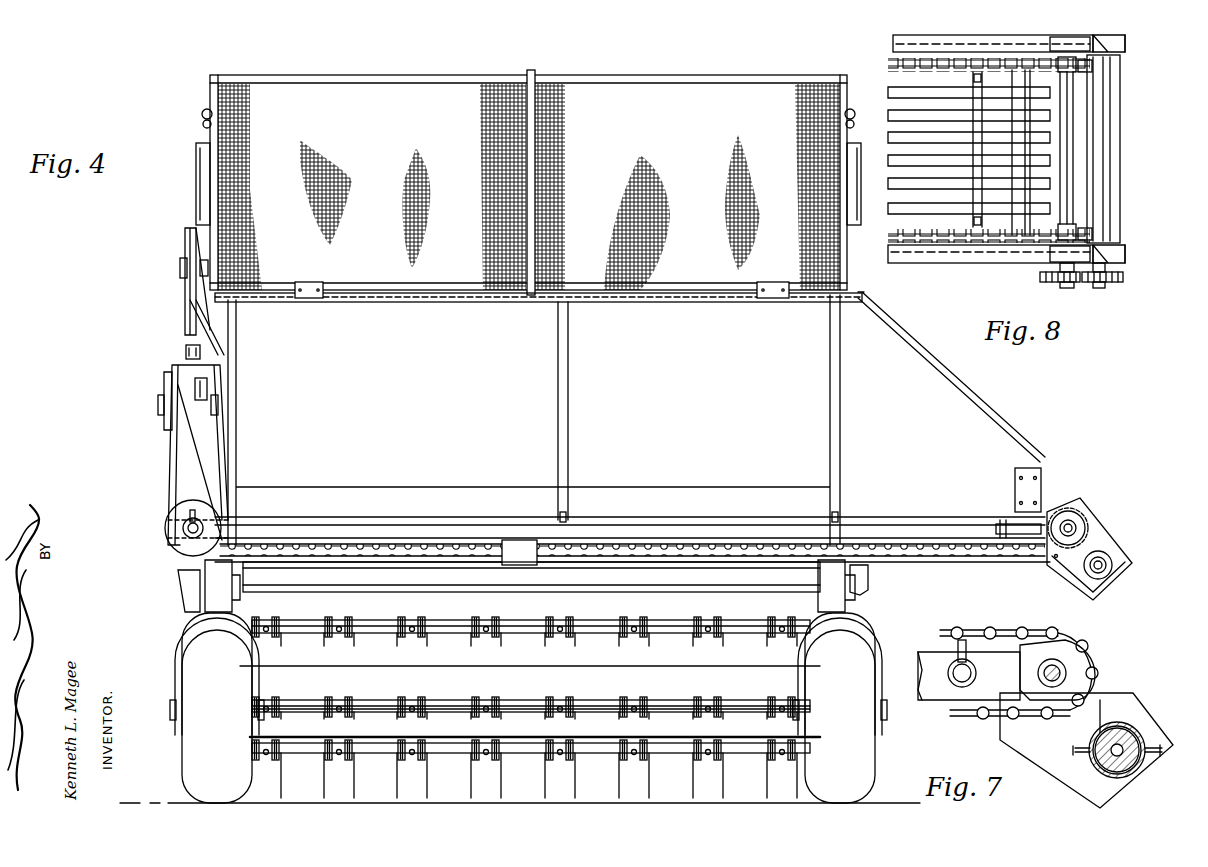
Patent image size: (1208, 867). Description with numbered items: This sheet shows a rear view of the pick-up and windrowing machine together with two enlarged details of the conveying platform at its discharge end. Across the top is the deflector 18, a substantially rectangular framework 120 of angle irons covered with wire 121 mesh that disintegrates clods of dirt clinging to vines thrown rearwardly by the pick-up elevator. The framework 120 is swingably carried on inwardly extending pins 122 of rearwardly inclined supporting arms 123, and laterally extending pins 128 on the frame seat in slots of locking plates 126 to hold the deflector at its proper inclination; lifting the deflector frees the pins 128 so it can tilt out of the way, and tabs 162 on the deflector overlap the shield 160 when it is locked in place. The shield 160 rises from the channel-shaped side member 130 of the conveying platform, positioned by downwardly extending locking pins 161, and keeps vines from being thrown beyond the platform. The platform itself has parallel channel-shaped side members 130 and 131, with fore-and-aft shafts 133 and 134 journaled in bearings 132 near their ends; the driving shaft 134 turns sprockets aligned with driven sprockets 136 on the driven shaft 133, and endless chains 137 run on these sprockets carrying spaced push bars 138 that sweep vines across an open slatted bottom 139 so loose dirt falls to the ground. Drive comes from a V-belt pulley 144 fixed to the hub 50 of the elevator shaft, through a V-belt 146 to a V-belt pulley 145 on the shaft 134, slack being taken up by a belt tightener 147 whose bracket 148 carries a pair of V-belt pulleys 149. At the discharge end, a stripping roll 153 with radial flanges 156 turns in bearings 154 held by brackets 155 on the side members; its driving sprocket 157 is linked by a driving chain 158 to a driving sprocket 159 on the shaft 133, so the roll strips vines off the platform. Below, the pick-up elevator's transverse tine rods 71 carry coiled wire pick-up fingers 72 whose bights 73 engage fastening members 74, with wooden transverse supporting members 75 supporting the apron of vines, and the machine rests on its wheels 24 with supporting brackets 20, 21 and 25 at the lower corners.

In FIG. 4, the deflector 18 is at (662, 64).
In FIG. 4, the bracket 20 is at (868, 582).
In FIG. 4, the bracket 21 is at (185, 584).
In FIG. 4, the wheel 24 is at (528, 708).
In FIG. 4, the wheel support 25 is at (529, 586).
In FIG. 4, the hub 50 is at (182, 267).
In FIG. 4, the tine rods 71 is at (531, 698).
In FIG. 4, the pick-up fingers 72 is at (546, 798).
In FIG. 4, the bights 73 is at (558, 700).
In FIG. 4, the fastening members 74 is at (564, 708).
In FIG. 4, the transverse supporting members 75 is at (450, 680).
In FIG. 4, the rectangular framework 120 is at (455, 78).
In FIG. 4, the wire 121 is at (632, 172).
In FIG. 4, the pins 122 is at (202, 152).
In FIG. 4, the supporting arms 123 is at (198, 170).
In FIG. 4, the locking plates 126 is at (208, 112).
In FIG. 4, the pins 128 is at (203, 124).
In FIG. 4, the channel-shaped side member 130 is at (632, 539).
In FIG. 8, the channel-shaped side member 130 is at (968, 264).
In FIG. 8, the channel-shaped side member 131 is at (982, 26).
In FIG. 4, the bearings 132 is at (1040, 532).
In FIG. 8, the bearings 132 is at (1040, 268).
In FIG. 4, the driven shaft 133 is at (1068, 526).
In FIG. 8, the driven shaft 133 is at (1068, 192).
In FIG. 7, the driven shaft 133 is at (1060, 674).
In FIG. 4, the driving shaft 134 is at (196, 528).
In FIG. 8, the driven sprockets 136 is at (1092, 238).
In FIG. 7, the driven sprockets 136 is at (1055, 657).
In FIG. 4, the endless chains 137 is at (340, 550).
In FIG. 8, the endless chains 137 is at (882, 258).
In FIG. 7, the endless chains 137 is at (1038, 636).
In FIG. 8, the push bars 138 is at (970, 80).
In FIG. 7, the push bars 138 is at (981, 642).
In FIG. 8, the open slatted bottom 139 is at (890, 94).
In FIG. 7, the open slatted bottom 139 is at (928, 648).
In FIG. 4, the V-belt pulley 144 is at (186, 242).
In FIG. 4, the V-belt pulley 145 is at (180, 544).
In FIG. 4, the V-belt 146 is at (186, 344).
In FIG. 4, the belt tightener 147 is at (186, 472).
In FIG. 4, the bracket 148 is at (160, 388).
In FIG. 4, the V-belt pulleys 149 is at (220, 412).
In FIG. 7, the stripping roll 153 is at (1136, 742).
In FIG. 8, the bearings 154 is at (1108, 272).
In FIG. 4, the brackets 155 is at (1062, 570).
In FIG. 8, the brackets 155 is at (1126, 254).
In FIG. 7, the brackets 155 is at (1128, 710).
In FIG. 7, the flanges 156 is at (1160, 760).
In FIG. 4, the driving sprocket 157 is at (1104, 562).
In FIG. 8, the driving sprocket 157 is at (1118, 284).
In FIG. 4, the driving chain 158 is at (1098, 554).
In FIG. 8, the driving chain 158 is at (1084, 286).
In FIG. 4, the driving sprocket 159 is at (1082, 540).
In FIG. 8, the driving sprocket 159 is at (1038, 285).
In FIG. 4, the shield 160 is at (534, 420).
In FIG. 4, the locking pins 161 is at (842, 518).
In FIG. 4, the tabs 162 is at (766, 290).